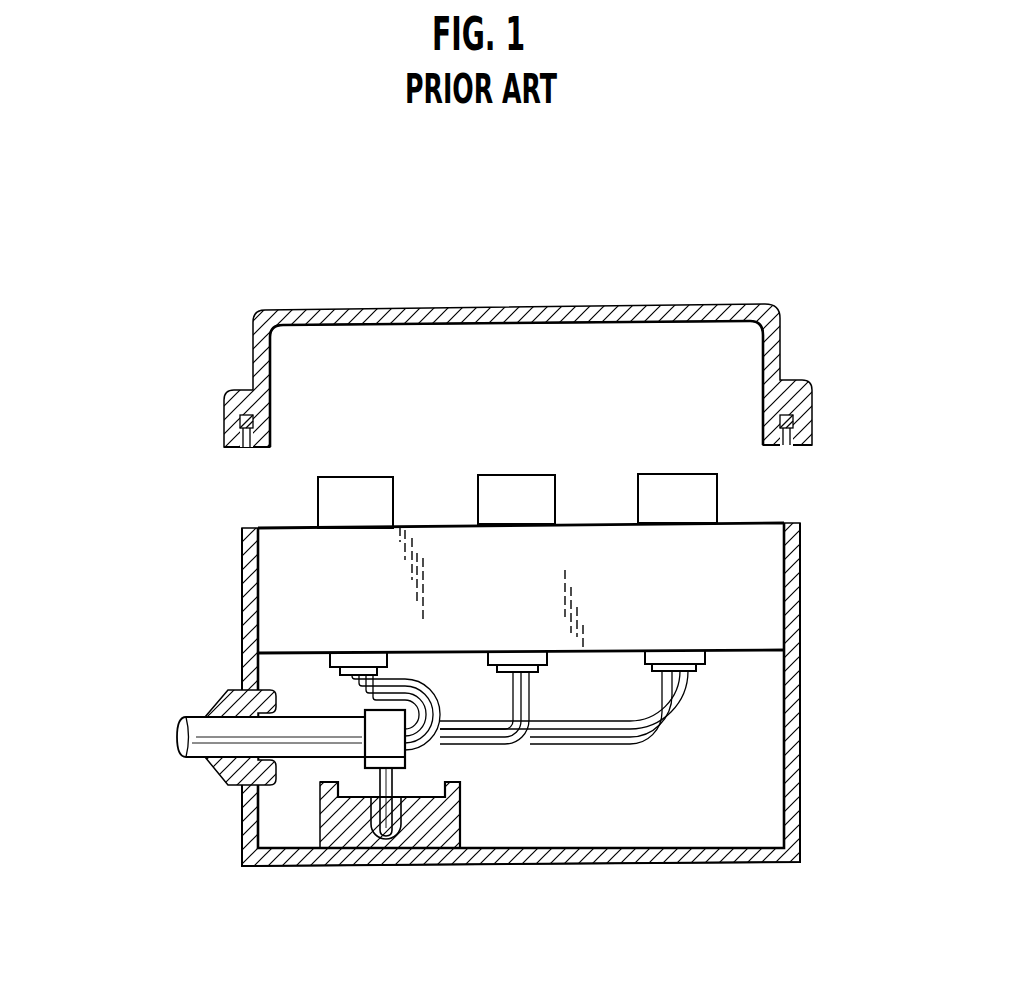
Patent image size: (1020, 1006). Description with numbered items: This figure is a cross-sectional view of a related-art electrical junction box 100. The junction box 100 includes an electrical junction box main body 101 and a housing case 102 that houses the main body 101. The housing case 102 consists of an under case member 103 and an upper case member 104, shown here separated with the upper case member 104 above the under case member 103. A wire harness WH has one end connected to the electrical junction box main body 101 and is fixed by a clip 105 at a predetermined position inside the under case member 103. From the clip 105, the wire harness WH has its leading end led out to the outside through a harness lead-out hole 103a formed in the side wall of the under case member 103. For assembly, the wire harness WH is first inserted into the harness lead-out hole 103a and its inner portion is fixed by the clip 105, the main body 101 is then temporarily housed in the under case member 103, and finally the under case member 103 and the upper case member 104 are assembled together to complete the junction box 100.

The electrical junction box 100 is at (262, 274).
The electrical junction box main body 101 is at (748, 585).
The housing case 102 is at (114, 444).
The under case member 103 is at (242, 565).
The harness lead-out hole 103a is at (247, 710).
The upper case member 104 is at (252, 362).
The clip 105 is at (374, 735).
The wire harness WH is at (185, 745).